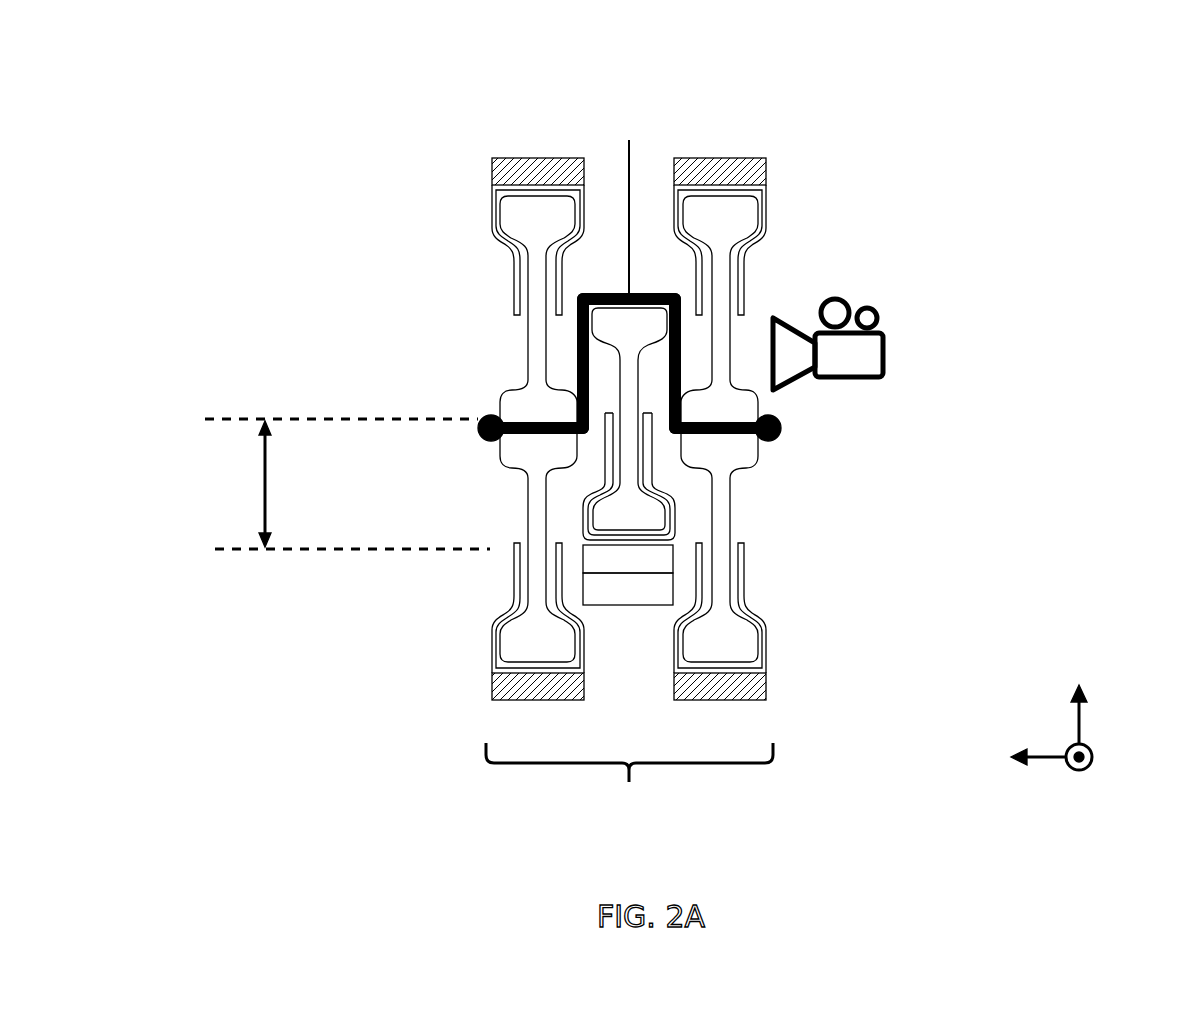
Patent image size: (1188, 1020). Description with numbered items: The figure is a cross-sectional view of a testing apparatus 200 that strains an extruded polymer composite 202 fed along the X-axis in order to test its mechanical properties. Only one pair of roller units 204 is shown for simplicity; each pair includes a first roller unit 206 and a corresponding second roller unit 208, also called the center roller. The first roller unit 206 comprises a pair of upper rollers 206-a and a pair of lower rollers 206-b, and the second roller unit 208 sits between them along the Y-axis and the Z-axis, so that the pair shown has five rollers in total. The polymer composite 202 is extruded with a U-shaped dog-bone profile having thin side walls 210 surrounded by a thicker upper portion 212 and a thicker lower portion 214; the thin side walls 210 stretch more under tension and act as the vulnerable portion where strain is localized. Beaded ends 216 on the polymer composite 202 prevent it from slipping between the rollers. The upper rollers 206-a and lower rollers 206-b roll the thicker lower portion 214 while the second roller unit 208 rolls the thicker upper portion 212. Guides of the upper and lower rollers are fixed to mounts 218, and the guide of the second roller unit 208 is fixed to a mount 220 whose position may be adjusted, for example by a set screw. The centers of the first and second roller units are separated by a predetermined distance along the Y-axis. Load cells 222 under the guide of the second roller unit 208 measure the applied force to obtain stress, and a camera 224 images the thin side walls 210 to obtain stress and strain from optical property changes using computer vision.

The testing apparatus 200 is at (1088, 141).
The polymer composite 202 is at (683, 313).
The pair of roller units 204 is at (629, 786).
The first roller unit 206 is at (675, 379).
The pair of upper rollers 206-a is at (535, 335).
The pair of lower rollers 206-b is at (530, 472).
The second roller unit 208 is at (627, 492).
The thin side walls 210 is at (683, 357).
The thicker upper portion 212 is at (629, 200).
The thicker lower portion 214 is at (707, 440).
The beaded ends 216 is at (780, 433).
The mounts 218 is at (492, 162).
The mount 220 is at (675, 605).
The load cells 222 is at (675, 555).
The camera 224 is at (867, 353).